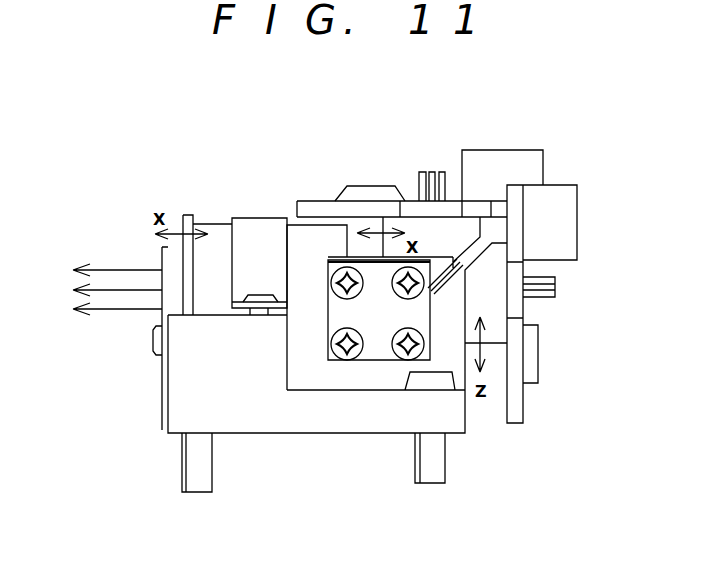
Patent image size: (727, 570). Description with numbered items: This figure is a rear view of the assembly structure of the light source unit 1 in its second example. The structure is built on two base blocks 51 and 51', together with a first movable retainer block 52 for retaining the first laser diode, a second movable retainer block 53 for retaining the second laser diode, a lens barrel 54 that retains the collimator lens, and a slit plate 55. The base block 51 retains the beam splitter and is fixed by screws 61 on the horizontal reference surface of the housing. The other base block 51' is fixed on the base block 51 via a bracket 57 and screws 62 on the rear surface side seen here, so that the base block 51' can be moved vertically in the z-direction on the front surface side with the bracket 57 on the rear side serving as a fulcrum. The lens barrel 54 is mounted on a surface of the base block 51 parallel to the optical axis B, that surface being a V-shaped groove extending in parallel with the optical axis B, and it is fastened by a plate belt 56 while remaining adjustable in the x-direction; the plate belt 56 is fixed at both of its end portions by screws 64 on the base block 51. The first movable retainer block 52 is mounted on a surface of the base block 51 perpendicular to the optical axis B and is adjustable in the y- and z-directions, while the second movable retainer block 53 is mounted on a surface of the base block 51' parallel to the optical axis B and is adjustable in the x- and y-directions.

The light source unit 1 is at (228, 151).
The base block 51 is at (337, 370).
The base block 51' is at (448, 308).
The first movable retainer block 52 is at (494, 307).
The second movable retainer block 53 is at (448, 228).
The lens barrel 54 is at (212, 223).
The slit plate 55 is at (162, 257).
The plate belt 56 is at (268, 218).
The bracket 57 is at (344, 358).
The screws 61 is at (181, 453).
The screws 62 is at (397, 335).
The screws 64 is at (257, 293).
The optical axis B is at (113, 290).